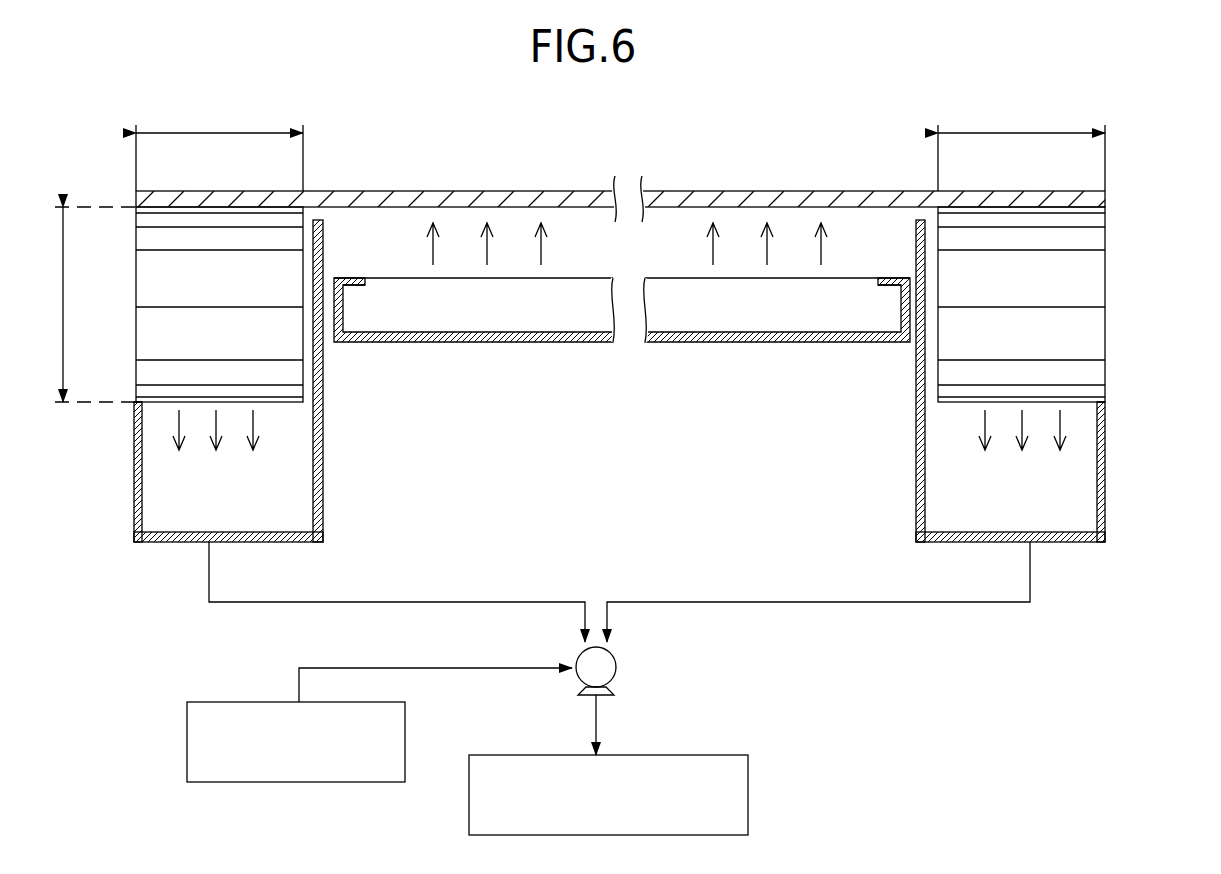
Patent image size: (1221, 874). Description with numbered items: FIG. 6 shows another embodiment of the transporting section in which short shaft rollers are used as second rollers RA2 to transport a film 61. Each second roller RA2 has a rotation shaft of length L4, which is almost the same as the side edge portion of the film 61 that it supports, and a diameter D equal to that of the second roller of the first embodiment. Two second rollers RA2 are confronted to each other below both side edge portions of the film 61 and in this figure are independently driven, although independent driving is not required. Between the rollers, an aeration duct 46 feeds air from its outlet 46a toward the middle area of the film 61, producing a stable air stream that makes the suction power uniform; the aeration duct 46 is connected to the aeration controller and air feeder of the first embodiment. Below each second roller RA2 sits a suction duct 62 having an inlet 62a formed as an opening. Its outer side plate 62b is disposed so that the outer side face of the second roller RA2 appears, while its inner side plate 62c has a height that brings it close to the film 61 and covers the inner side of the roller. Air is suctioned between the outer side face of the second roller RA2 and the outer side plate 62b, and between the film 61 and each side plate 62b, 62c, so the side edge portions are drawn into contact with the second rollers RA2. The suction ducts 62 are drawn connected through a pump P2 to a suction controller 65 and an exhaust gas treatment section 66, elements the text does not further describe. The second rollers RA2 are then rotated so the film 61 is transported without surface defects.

The film 61 is at (412, 190).
The second roller RA2 is at (136, 232).
The length of rotation shaft L4 is at (620, 146).
The diameter of second roller D is at (86, 304).
The aeration duct 46 is at (681, 345).
The outlet of aeration duct 46a is at (415, 278).
The suction duct 62 is at (621, 429).
The inlet 62a is at (152, 414).
The outer side plate 62b is at (134, 503).
The inner side plate 62c is at (324, 500).
The suction pump P2 is at (617, 668).
The suction controller 65 is at (187, 748).
The exhaust gas treatment section 66 is at (748, 790).